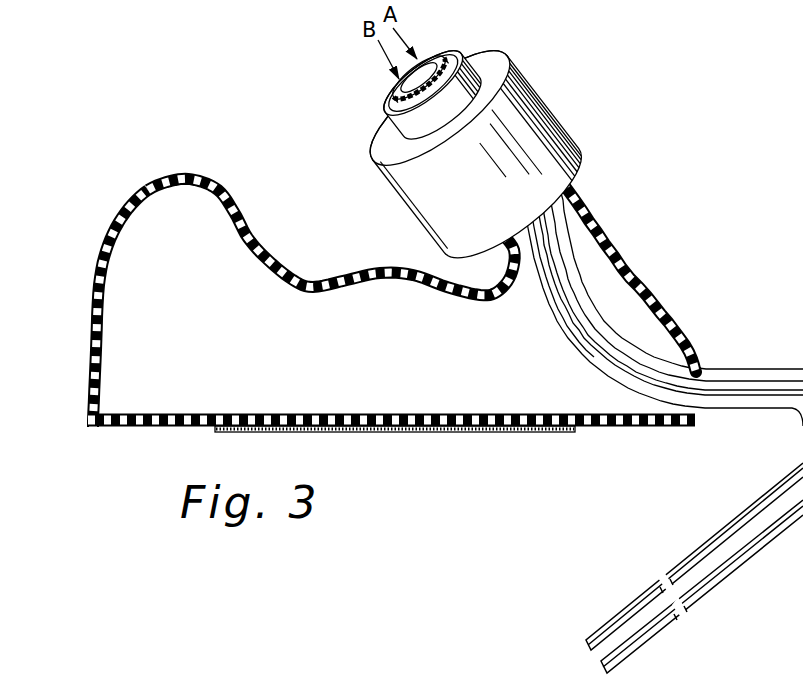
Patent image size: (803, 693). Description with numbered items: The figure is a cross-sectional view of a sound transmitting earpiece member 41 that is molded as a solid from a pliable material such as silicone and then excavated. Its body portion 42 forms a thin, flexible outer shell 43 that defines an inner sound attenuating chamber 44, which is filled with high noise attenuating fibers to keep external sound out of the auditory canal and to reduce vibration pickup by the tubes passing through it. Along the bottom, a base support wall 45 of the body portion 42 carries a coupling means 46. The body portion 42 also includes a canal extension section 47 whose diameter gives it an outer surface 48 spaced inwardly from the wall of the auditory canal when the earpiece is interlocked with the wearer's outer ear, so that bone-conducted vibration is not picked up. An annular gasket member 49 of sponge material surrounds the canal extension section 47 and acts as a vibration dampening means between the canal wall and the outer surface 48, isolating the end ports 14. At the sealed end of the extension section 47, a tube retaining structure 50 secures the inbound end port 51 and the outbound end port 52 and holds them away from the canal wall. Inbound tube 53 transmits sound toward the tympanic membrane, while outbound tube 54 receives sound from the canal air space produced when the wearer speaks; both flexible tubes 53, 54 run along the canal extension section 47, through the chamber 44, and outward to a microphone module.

The end ports 14 is at (425, 62).
The sound transmitting earpiece member 41 is at (183, 135).
The body portion 42 is at (238, 212).
The outer shell 43 is at (95, 274).
The inner sound attenuating chamber 44 is at (307, 362).
The base support wall 45 is at (143, 428).
The coupling means 46 is at (425, 432).
The canal extension section 47 is at (584, 177).
The outer surface 48 is at (400, 122).
The annular gasket member 49 is at (541, 113).
The tube retaining structure 50 is at (467, 47).
The inbound end port 51 is at (434, 63).
The outbound end port 52 is at (400, 90).
The inbound tube 53 is at (575, 272).
The outbound tube 54 is at (540, 278).